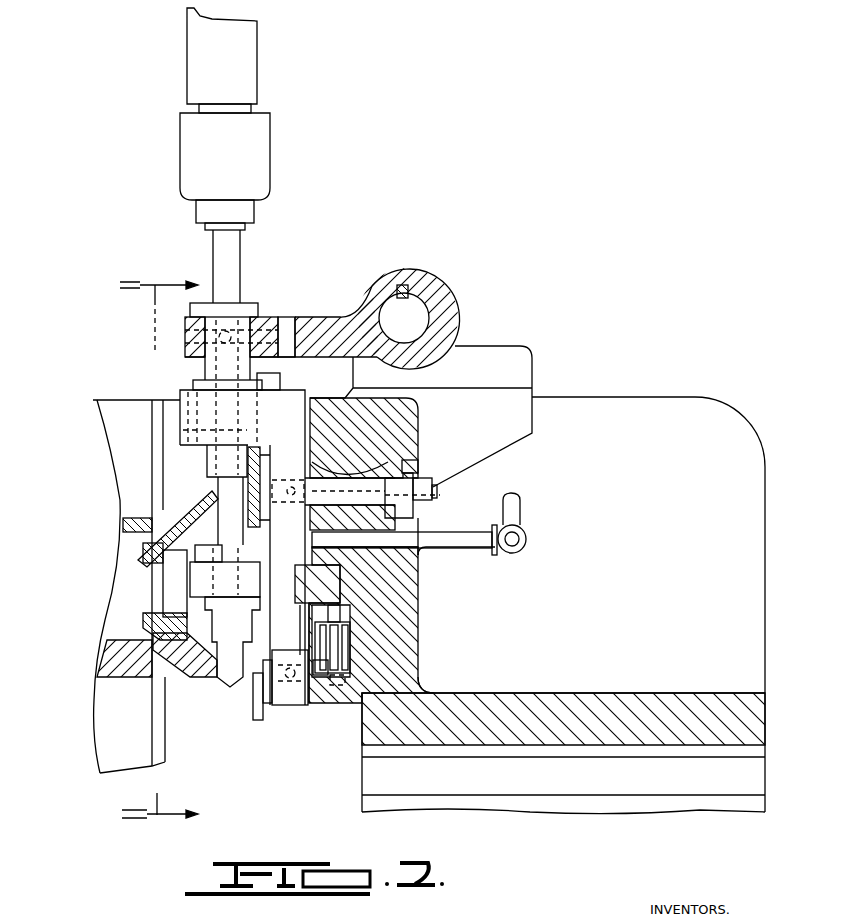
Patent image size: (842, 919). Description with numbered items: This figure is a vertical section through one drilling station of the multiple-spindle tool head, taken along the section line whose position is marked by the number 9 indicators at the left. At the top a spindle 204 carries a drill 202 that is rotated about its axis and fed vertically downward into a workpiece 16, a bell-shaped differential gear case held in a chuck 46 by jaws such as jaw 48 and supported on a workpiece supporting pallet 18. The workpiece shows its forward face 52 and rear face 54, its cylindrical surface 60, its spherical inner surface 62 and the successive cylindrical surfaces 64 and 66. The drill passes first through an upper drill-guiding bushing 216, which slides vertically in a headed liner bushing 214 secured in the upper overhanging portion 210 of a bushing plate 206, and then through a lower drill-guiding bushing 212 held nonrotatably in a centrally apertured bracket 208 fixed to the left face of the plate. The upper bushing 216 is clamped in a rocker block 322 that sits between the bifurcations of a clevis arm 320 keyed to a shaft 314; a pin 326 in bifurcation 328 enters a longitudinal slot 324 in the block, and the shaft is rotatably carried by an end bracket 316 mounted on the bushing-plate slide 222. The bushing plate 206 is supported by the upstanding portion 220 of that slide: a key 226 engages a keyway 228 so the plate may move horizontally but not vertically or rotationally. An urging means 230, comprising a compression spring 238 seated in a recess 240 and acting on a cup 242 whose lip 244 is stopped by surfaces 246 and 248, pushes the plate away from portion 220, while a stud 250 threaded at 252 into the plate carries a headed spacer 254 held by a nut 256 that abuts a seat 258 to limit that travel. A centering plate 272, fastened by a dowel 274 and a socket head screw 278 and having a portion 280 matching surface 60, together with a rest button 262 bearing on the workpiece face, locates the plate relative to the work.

The spindle 204 is at (185, 80).
The section line 9- 9 is at (159, 550).
The rocker block 322 is at (188, 320).
The longitudinal slot 324 is at (185, 338).
The pin 326 is at (240, 303).
The bifurcation 328 is at (290, 318).
The clevis arm 320 is at (312, 320).
The shaft 314 is at (412, 303).
The end bracket 316 is at (520, 351).
The upper drill-guiding bushing 216 is at (273, 366).
The headed liner bushing 214 is at (200, 383).
The jaw 48 is at (172, 442).
The workpiece 16 is at (152, 522).
The chuck 46 is at (103, 406).
The workpiece supporting pallet 18 is at (98, 778).
The forward face 52 is at (268, 443).
The upper overhanging portion 210 is at (184, 400).
The drill 202 is at (228, 517).
The cylindrical surface 66 is at (140, 564).
The cylindrical surface 64 is at (163, 569).
The centrally apertured bracket 208 is at (195, 588).
The drill-guiding bushing 212 is at (124, 658).
The spherical inner surface 62 is at (218, 633).
The rear face 54 is at (255, 714).
The portion of centering plate 280 is at (255, 699).
The rest button 262 is at (262, 715).
The bushing plate 206 is at (286, 706).
The cup 242 is at (302, 706).
The urging means 230 is at (323, 680).
The keyway 228 is at (340, 590).
The socket head screw 278 is at (330, 580).
The key 226 is at (343, 598).
The dowel 274 is at (296, 580).
The surface 246 is at (341, 613).
The recess 240 is at (350, 641).
The compression spring 238 is at (348, 658).
The lip 244 is at (344, 679).
The surface 248 is at (312, 606).
The threaded portion 252 is at (300, 433).
The stud 250 is at (330, 478).
The seat 258 is at (400, 466).
The cylindrical surface 60 is at (270, 528).
The centering plate 272 is at (312, 522).
The headed spacer 254 is at (400, 477).
The nut 256 is at (430, 479).
The upstanding portion 220 is at (412, 563).
The bushing-plate slide 222 is at (540, 694).